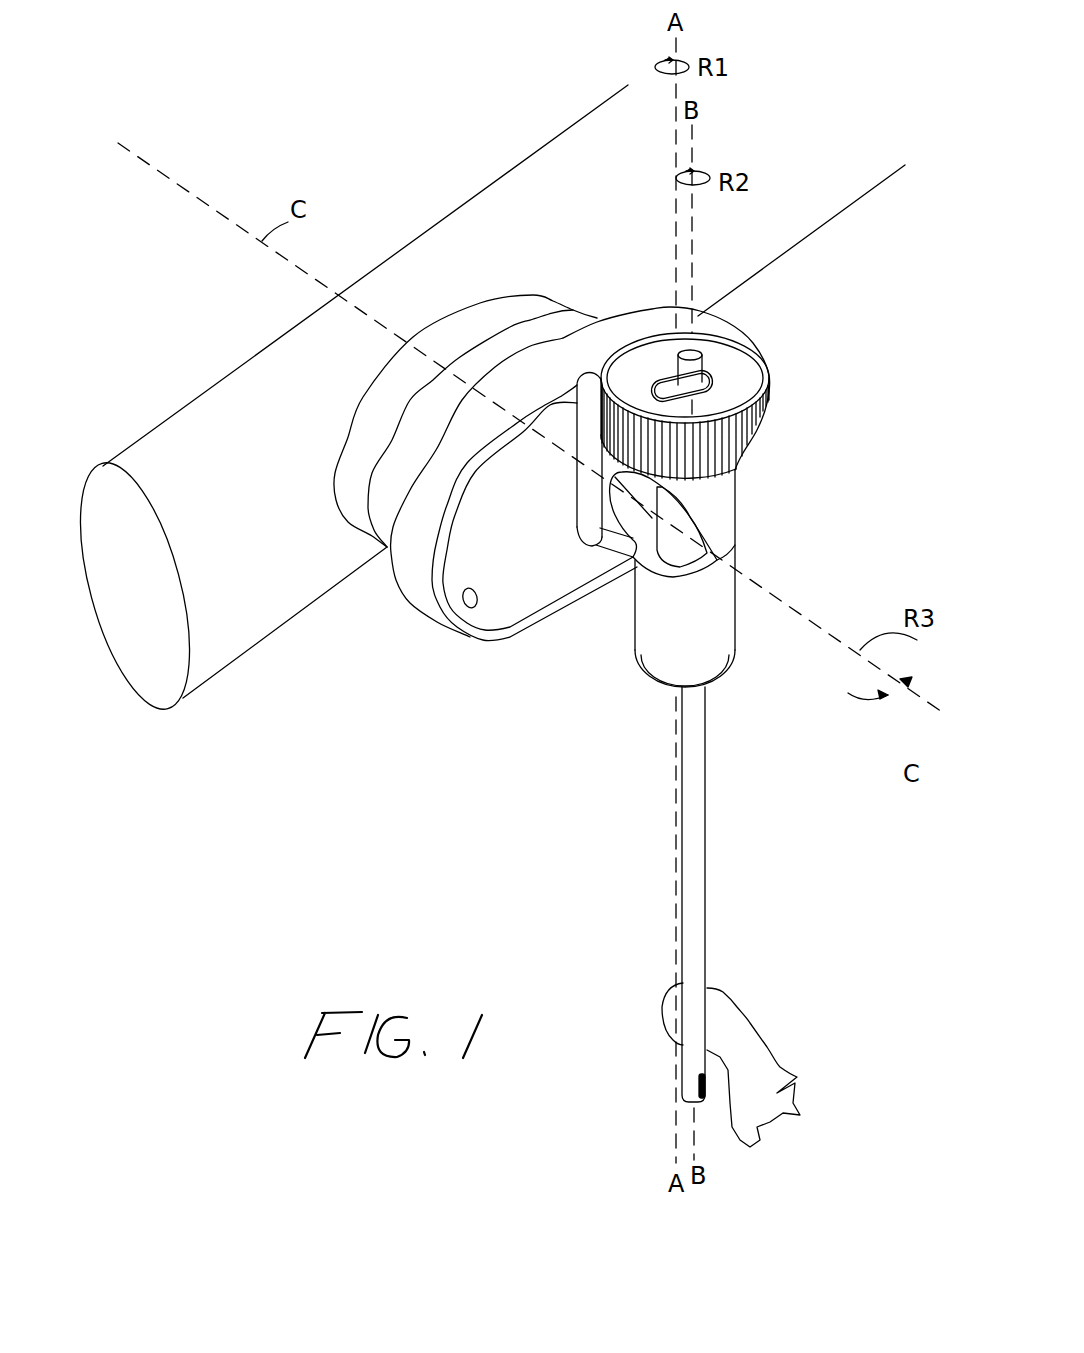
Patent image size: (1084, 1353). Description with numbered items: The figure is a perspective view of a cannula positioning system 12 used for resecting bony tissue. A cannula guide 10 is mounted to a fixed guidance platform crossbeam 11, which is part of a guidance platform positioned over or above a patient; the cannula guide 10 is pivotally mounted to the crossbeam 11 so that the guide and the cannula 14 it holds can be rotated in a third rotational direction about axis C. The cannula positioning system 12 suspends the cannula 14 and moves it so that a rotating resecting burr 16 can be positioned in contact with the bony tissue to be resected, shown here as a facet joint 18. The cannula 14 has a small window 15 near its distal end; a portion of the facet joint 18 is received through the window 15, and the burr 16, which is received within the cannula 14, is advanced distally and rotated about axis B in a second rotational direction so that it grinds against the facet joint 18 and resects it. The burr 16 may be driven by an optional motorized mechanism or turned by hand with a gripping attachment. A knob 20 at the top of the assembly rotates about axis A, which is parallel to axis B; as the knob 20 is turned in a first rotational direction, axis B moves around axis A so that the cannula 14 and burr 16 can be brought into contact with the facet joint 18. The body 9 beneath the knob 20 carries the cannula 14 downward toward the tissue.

The cylindrical body 9 is at (720, 645).
The cannula guide 10 is at (532, 607).
The guidance platform crossbeam 11 is at (482, 413).
The cannula positioning system 12 is at (815, 415).
The cannula 14 is at (698, 823).
The window 15 is at (717, 1077).
The rotating resecting burr 16 is at (704, 376).
The facet joint 18 is at (737, 1030).
The knob 20 is at (800, 463).